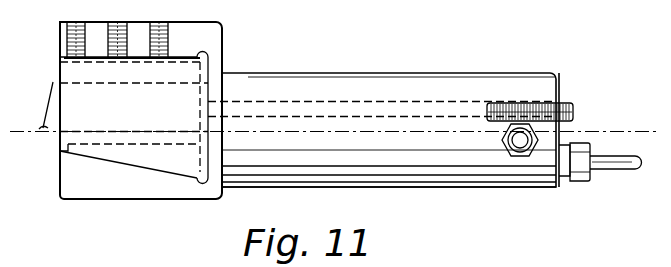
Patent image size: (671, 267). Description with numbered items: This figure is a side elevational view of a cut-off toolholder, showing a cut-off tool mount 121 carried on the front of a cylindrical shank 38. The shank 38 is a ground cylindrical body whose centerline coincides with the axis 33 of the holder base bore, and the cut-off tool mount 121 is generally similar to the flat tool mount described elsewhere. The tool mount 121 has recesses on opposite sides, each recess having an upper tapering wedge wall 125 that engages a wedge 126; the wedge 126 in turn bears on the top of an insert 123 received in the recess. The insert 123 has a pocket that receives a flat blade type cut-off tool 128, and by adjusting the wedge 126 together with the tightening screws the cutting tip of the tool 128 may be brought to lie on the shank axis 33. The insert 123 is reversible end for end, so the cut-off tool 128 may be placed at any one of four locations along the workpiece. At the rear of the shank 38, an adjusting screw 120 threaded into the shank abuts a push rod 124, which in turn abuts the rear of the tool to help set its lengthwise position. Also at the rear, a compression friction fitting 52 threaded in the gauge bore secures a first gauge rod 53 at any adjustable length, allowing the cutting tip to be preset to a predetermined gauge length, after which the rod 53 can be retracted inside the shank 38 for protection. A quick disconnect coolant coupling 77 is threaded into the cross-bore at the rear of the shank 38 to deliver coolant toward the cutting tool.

The axis 33 is at (290, 132).
The cylindrical shank 38 is at (310, 176).
The compression friction fitting 52 is at (583, 182).
The first gauge rod 53 is at (628, 169).
The quick disconnect coolant coupling 77 is at (520, 157).
The adjusting screw 120 is at (565, 103).
The cut-off tool mount 121 is at (205, 199).
The insert 123 is at (62, 70).
The push rod 124 is at (324, 100).
The tapering wedge wall 125 is at (110, 162).
The wedge 126 is at (185, 169).
The flat blade type cut-off tool 128 is at (50, 100).